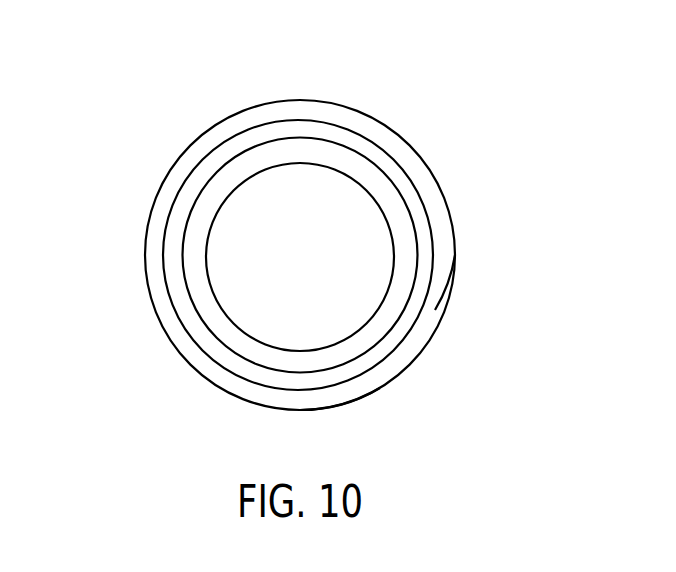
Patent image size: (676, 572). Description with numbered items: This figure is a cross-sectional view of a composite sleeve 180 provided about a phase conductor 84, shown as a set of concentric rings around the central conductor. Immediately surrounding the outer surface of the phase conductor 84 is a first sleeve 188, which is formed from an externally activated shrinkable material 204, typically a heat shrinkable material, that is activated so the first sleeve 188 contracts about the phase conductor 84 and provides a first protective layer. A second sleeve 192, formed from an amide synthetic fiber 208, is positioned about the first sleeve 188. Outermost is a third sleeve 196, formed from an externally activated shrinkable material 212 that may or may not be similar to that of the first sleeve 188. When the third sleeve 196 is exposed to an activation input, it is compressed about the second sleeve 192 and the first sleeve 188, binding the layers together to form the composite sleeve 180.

The composite sleeve 180 is at (146, 69).
The third sleeve 196 is at (333, 97).
The second sleeve 192 is at (207, 149).
The externally activated shrinkable material 204 is at (181, 238).
The first sleeve 188 is at (237, 366).
The amide synthetic fiber 208 is at (432, 287).
The phase conductor 84 is at (353, 294).
The externally activated shrinkable material 212 is at (358, 403).